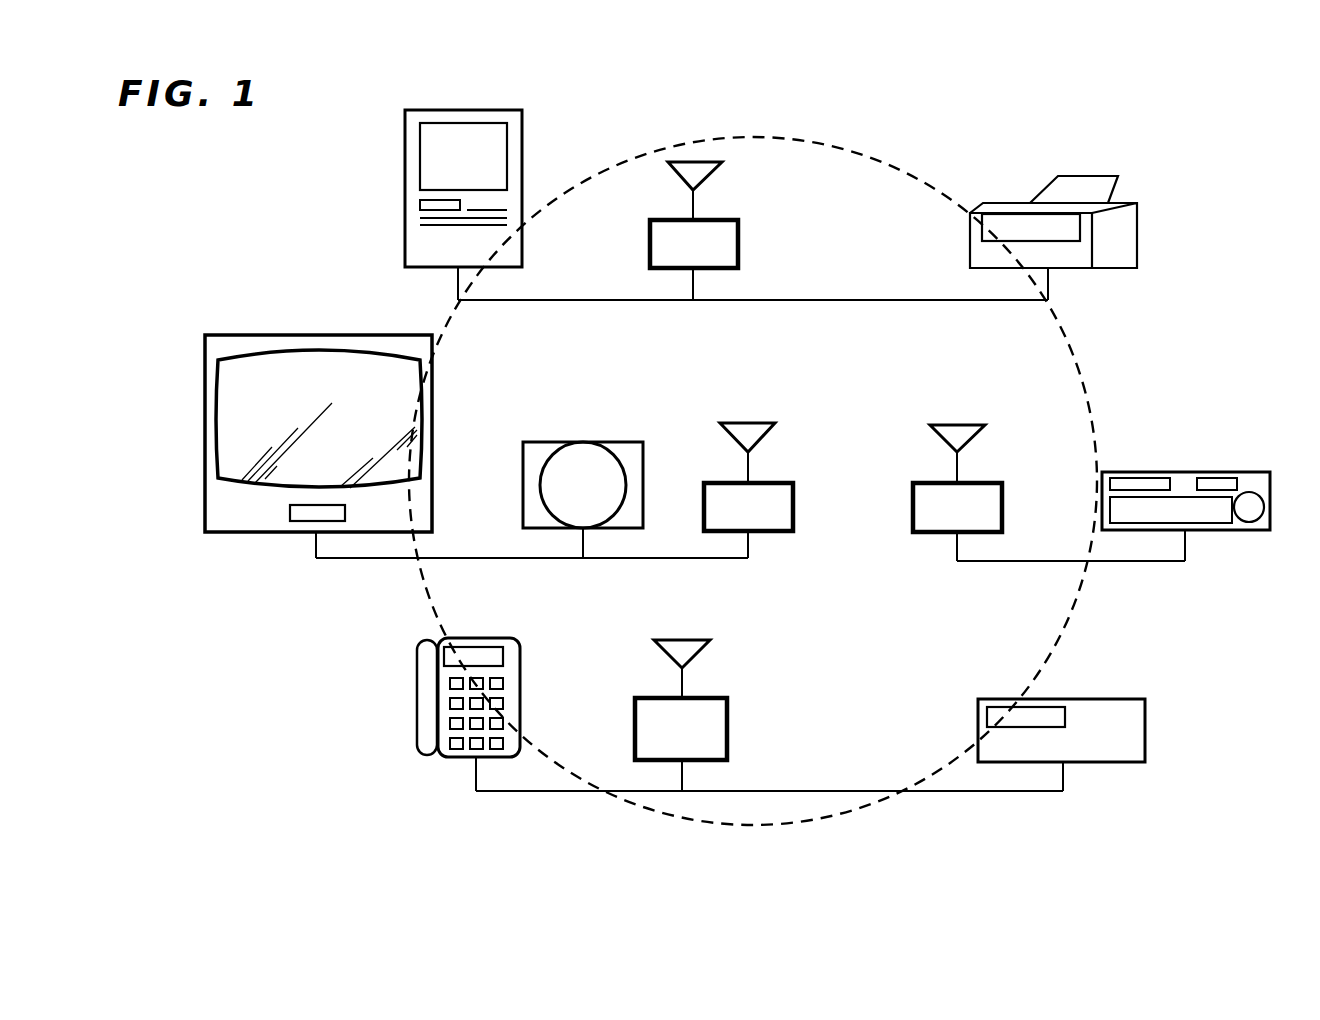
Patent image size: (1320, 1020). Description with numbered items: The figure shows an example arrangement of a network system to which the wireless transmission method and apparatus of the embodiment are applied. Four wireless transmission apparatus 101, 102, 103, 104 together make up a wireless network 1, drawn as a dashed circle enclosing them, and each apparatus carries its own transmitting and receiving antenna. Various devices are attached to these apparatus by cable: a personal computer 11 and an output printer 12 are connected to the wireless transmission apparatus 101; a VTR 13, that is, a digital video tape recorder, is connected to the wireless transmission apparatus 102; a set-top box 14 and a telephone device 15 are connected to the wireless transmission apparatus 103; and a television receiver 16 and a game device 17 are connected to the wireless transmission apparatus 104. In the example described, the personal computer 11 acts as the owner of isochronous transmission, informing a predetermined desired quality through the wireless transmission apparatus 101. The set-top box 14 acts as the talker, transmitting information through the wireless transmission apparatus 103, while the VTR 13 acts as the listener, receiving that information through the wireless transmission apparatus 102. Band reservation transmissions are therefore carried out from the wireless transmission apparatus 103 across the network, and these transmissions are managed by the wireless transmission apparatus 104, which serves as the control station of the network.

The wireless network 1 is at (862, 154).
The personal computer 11 is at (405, 163).
The output printer 12 is at (1022, 204).
The VTR 13 is at (1215, 472).
The set-top box 14 is at (1096, 699).
The telephone device 15 is at (417, 690).
The television receiver 16 is at (320, 335).
The game device 17 is at (583, 442).
The wireless transmission apparatus 101 is at (740, 243).
The wireless transmission apparatus 102 is at (1052, 503).
The wireless transmission apparatus 103 is at (728, 740).
The wireless transmission apparatus 104 is at (795, 505).